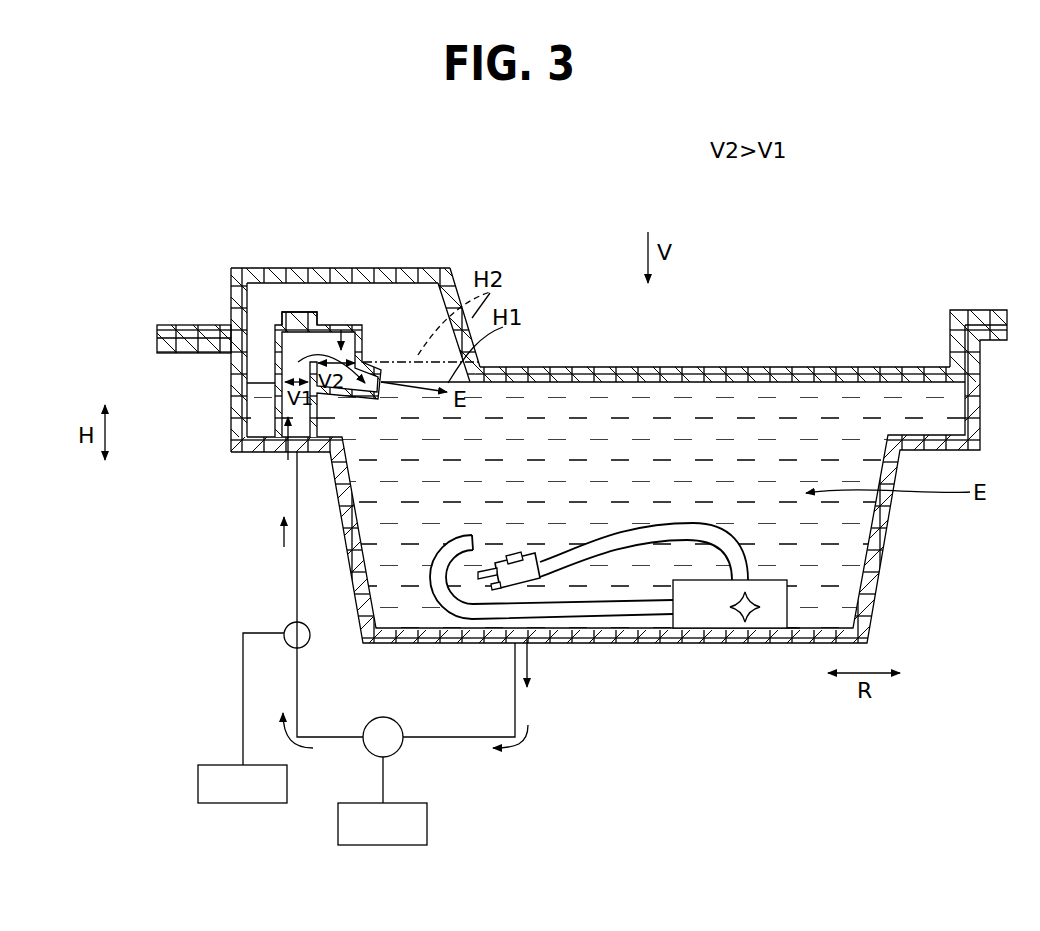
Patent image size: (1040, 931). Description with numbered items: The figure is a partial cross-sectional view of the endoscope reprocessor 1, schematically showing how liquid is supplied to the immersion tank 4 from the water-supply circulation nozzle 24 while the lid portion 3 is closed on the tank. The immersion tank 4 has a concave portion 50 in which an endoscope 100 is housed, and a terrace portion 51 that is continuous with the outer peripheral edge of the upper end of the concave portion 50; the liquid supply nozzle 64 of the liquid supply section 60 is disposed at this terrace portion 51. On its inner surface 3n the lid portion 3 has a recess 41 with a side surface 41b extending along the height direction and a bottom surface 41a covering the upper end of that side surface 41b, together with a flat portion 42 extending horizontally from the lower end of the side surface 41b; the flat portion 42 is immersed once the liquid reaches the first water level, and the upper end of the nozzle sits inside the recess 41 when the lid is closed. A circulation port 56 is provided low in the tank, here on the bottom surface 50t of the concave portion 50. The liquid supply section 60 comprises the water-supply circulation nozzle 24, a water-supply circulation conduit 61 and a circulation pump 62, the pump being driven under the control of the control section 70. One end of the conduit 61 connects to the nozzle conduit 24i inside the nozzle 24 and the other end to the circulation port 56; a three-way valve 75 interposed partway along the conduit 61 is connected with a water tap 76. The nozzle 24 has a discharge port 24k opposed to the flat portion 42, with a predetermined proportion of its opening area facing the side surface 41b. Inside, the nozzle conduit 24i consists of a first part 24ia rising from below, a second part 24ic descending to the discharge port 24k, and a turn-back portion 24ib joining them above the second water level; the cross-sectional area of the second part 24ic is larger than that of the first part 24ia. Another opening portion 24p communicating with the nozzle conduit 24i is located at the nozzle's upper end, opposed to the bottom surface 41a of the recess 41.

The endoscope reprocessor 1 is at (796, 252).
The lid portion 3 is at (695, 368).
The inner surface 3n is at (573, 163).
The immersion tank 4 is at (887, 560).
The recess 41 is at (458, 199).
The bottom surface 41a is at (387, 287).
The side surface 41b is at (440, 308).
The flat portion 42 is at (628, 392).
The water-supply circulation nozzle 24 is at (233, 440).
The liquid supply nozzle 64 is at (330, 384).
The nozzle conduit 24i is at (120, 243).
The first part 24ia is at (297, 370).
The turn-back portion 24ib is at (313, 342).
The second part 24ic is at (341, 342).
The opening portion 24p is at (300, 313).
The discharge port 24k is at (300, 450).
The terrace portion 51 is at (255, 453).
The concave portion 50 is at (737, 631).
The bottom surface 50t is at (815, 627).
The circulation port 56 is at (538, 645).
The liquid supply section 60 is at (73, 487).
The water-supply circulation conduit 61 is at (296, 602).
The circulation pump 62 is at (368, 752).
The control section 70 is at (427, 823).
The three-way valve 75 is at (307, 642).
The water tap 76 is at (198, 782).
The endoscope 100 is at (645, 622).